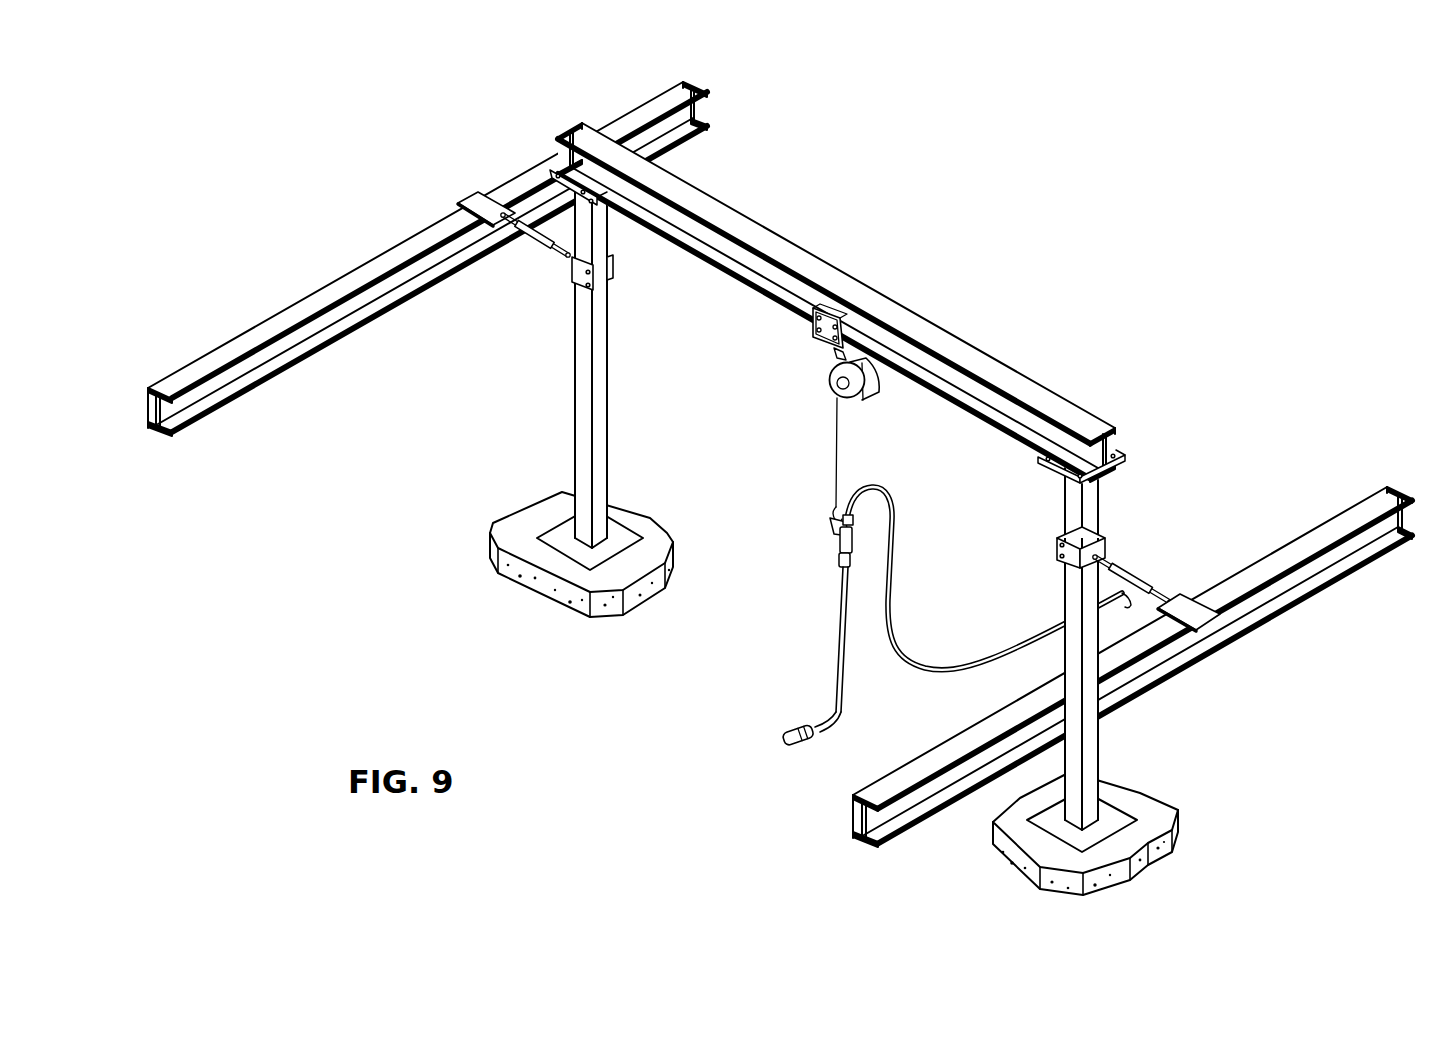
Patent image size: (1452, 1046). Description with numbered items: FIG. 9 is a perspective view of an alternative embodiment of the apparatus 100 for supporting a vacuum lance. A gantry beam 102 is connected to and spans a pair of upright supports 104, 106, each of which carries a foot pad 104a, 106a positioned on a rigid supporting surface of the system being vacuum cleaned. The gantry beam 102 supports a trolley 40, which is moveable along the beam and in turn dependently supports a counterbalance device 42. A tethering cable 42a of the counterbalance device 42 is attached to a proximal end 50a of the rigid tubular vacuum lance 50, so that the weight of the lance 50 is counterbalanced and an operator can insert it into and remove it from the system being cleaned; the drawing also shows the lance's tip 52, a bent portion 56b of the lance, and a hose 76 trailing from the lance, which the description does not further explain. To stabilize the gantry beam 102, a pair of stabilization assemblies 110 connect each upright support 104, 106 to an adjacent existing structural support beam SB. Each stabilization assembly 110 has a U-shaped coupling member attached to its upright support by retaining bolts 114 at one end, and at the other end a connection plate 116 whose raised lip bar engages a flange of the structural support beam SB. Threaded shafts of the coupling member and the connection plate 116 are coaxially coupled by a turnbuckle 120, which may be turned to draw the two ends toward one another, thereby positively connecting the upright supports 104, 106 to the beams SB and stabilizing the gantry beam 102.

The apparatus 100 is at (1136, 327).
The gantry beam 102 is at (790, 262).
The upright support 104 is at (1093, 507).
The foot pad 104a is at (1115, 820).
The upright support 106 is at (608, 391).
The foot pad 106a is at (560, 537).
The stabilization assembly 110 is at (892, 432).
The retaining bolts 114 is at (585, 288).
The connection plate 116 is at (484, 205).
The turnbuckle 120 is at (512, 243).
The trolley 40 is at (827, 338).
The counterbalance device 42 is at (872, 386).
The tethering cable 42a is at (838, 452).
The tubular vacuum lance 50 is at (834, 680).
The proximal end 50a is at (842, 548).
The tool bit 52 is at (803, 747).
The tool handle end 56b is at (838, 715).
The air hose 76 is at (976, 660).
The structural support beam SB is at (293, 316).